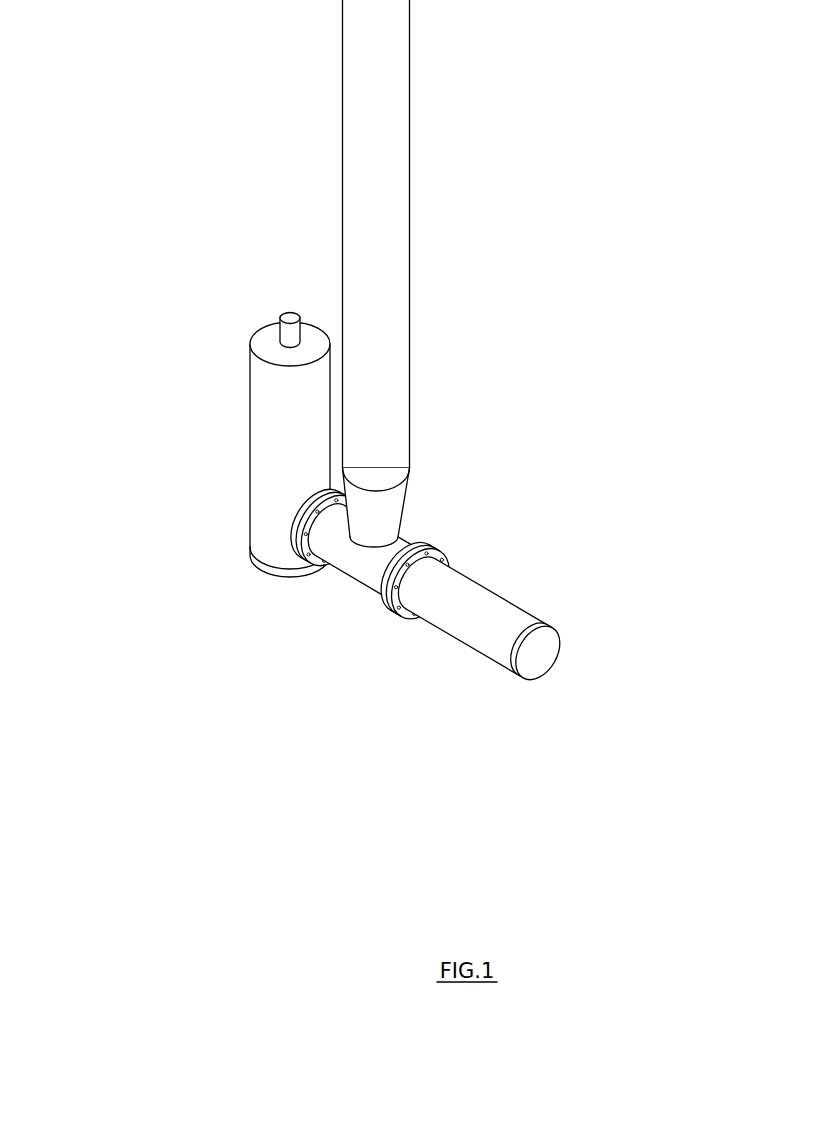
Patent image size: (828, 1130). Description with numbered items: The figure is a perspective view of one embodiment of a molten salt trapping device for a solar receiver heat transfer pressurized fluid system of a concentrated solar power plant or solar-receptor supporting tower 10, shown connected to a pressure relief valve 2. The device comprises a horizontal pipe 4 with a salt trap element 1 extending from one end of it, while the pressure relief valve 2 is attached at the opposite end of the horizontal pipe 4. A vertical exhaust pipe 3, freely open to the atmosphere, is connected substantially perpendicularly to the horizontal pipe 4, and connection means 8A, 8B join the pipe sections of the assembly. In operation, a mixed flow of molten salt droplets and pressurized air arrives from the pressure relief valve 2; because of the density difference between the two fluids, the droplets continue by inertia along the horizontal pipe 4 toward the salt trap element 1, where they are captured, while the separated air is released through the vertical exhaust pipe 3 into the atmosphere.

The salt trap element 1 is at (513, 555).
The pressure relief valve 2 is at (235, 377).
The vertical exhaust pipe 3 is at (412, 187).
The horizontal pipe 4 is at (357, 540).
The connection means 8A is at (312, 542).
The connection means 8B is at (397, 600).
The concentrated solar power plant/solar-receptors supporting tower 10 is at (485, 398).